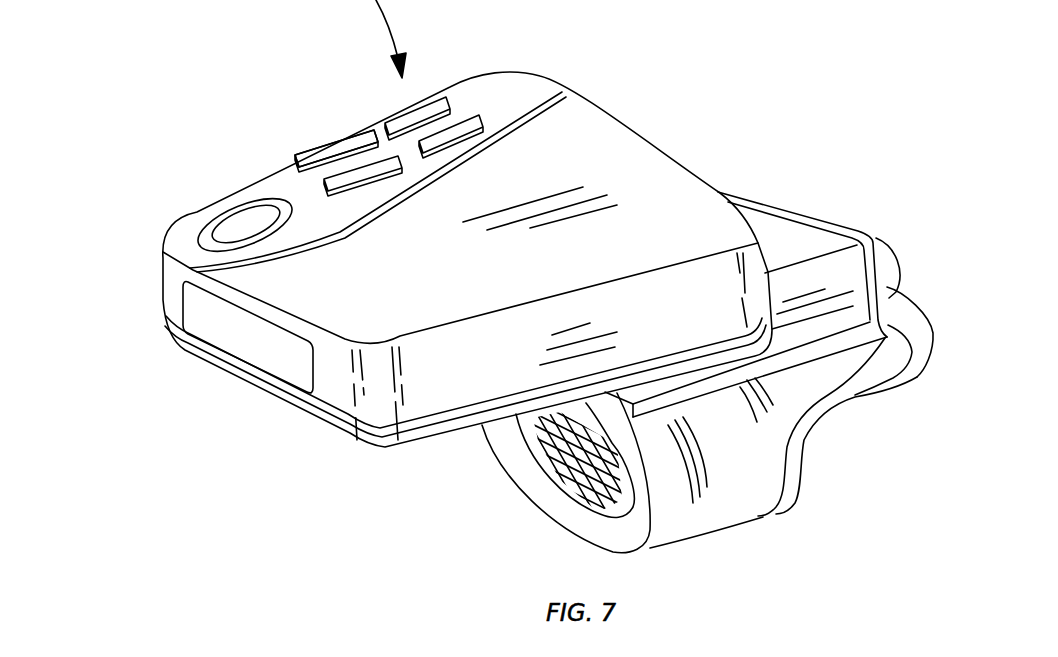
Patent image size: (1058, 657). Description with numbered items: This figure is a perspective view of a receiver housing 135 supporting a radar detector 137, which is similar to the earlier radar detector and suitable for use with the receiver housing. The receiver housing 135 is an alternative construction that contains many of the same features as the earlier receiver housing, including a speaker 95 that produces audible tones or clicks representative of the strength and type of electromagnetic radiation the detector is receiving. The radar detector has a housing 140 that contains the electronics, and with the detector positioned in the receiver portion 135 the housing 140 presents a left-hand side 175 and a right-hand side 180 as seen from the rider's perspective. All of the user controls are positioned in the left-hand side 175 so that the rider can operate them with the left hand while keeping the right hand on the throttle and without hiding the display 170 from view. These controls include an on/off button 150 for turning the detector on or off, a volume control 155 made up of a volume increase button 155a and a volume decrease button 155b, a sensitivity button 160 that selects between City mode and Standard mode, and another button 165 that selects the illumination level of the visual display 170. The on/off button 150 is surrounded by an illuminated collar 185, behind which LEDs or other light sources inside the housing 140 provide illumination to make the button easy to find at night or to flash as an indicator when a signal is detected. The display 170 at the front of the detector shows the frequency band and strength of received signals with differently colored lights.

The speaker 95 is at (575, 480).
The receiver housing 135 is at (713, 518).
The radar detector 137 is at (660, 160).
The housing 140 is at (642, 258).
The on/off button 150 is at (237, 225).
The volume control 155 is at (338, 147).
The volume increase button 155a is at (353, 143).
The volume decrease button 155b is at (435, 107).
The sensitivity button 160 is at (342, 183).
The illumination control button 165 is at (463, 122).
The display 170 is at (287, 368).
The left-hand side 175 is at (177, 240).
The right-hand side 180 is at (712, 207).
The illuminated collar 185 is at (263, 200).